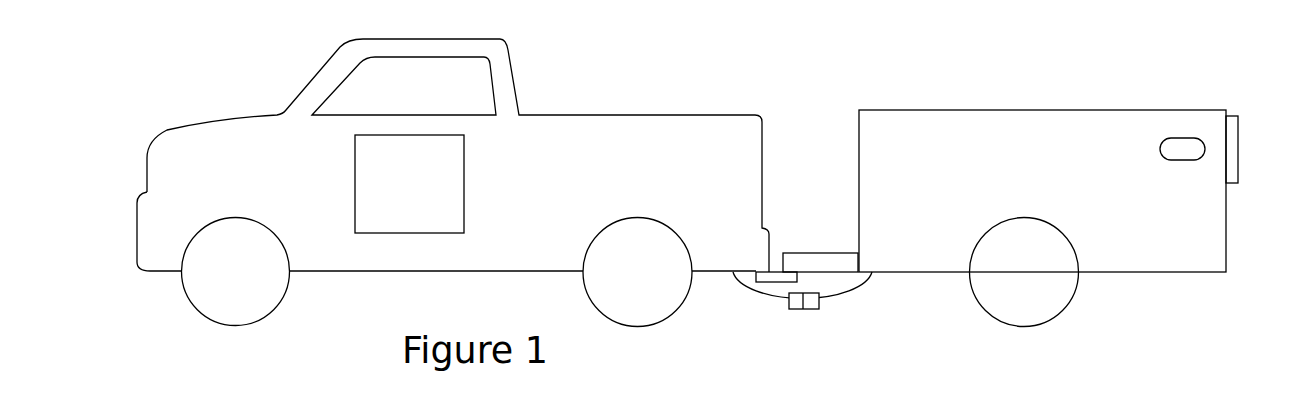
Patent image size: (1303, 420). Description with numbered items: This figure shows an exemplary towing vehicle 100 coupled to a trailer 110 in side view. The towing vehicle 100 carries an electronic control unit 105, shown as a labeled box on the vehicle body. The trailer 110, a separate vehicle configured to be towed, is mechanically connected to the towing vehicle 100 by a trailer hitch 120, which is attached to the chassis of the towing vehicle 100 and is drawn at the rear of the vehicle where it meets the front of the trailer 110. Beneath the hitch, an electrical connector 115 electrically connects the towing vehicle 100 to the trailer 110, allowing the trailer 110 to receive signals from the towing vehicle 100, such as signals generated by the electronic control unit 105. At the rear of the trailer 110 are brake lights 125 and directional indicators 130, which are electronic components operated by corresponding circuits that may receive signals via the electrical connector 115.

The towing vehicle 100 is at (637, 116).
The electronic control unit 105 is at (464, 170).
The trailer 110 is at (1054, 111).
The electrical connector 115 is at (803, 309).
The trailer hitch 120 is at (802, 253).
The brake lights 125 is at (1230, 112).
The directional indicators 130 is at (1158, 148).